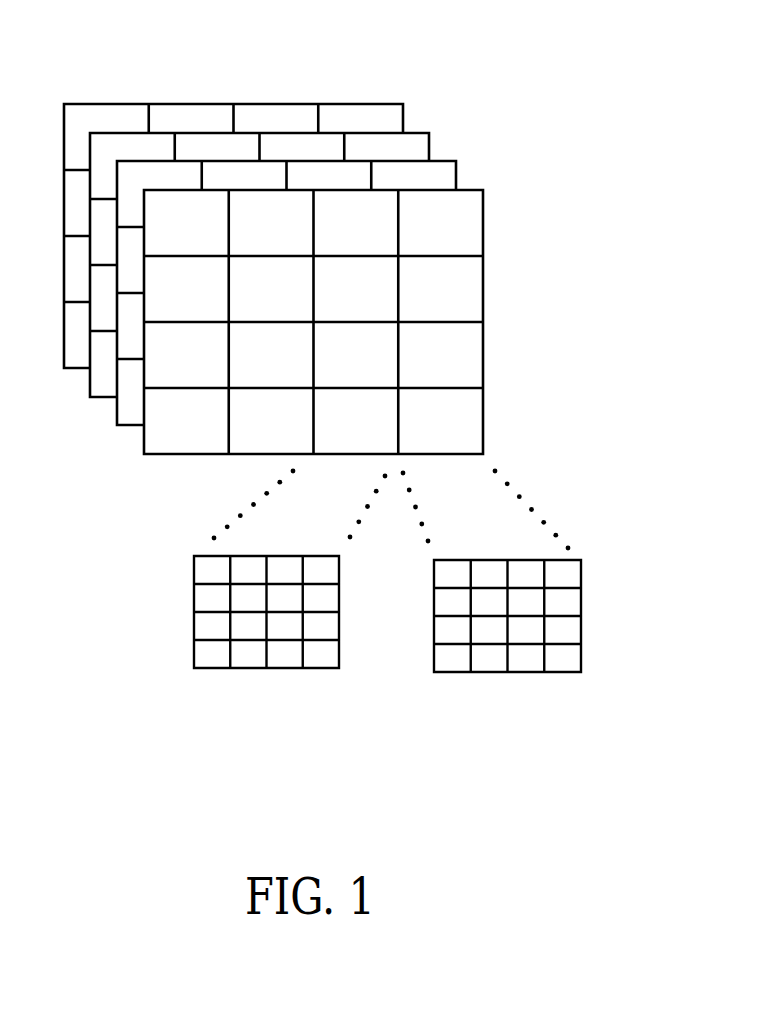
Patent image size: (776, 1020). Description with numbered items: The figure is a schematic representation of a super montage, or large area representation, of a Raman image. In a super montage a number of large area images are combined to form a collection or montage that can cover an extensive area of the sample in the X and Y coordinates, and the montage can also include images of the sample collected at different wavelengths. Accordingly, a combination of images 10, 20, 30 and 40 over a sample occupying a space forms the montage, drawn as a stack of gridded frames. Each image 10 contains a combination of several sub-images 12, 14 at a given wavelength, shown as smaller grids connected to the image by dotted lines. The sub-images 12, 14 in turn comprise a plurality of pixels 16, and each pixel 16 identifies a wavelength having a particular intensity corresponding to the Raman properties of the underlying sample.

The image 10 is at (483, 193).
The image 20 is at (456, 165).
The image 30 is at (429, 137).
The image 40 is at (403, 107).
The sub-image 12 is at (578, 675).
The sub-image 14 is at (193, 670).
The pixel 16 is at (495, 658).